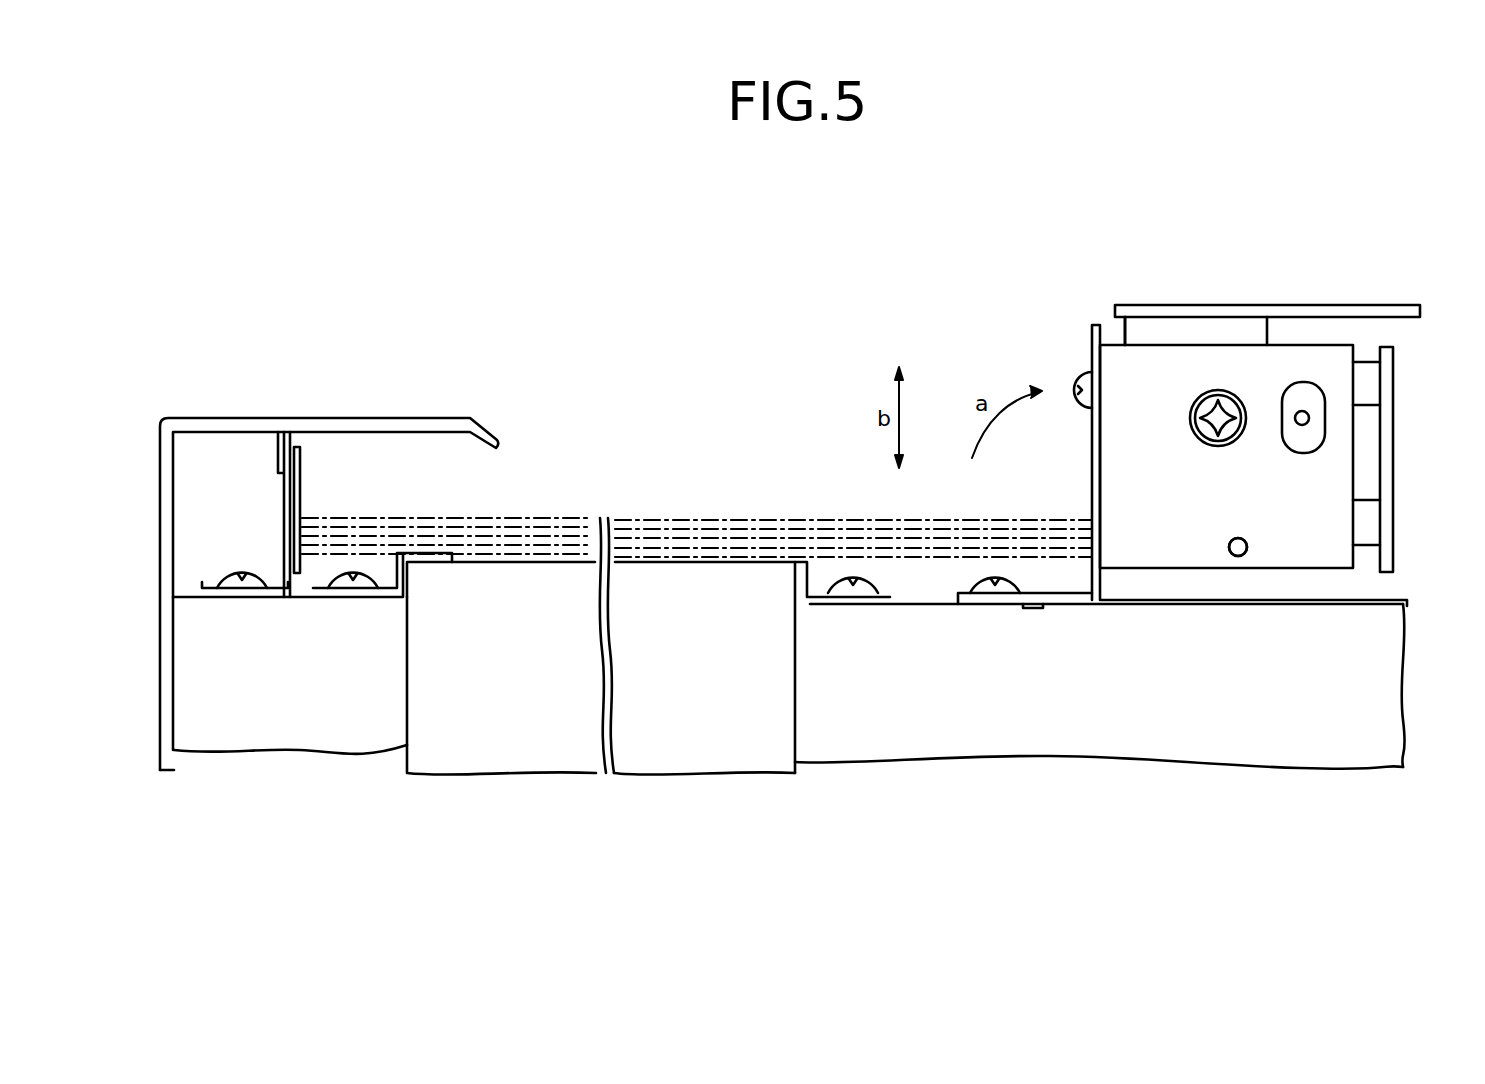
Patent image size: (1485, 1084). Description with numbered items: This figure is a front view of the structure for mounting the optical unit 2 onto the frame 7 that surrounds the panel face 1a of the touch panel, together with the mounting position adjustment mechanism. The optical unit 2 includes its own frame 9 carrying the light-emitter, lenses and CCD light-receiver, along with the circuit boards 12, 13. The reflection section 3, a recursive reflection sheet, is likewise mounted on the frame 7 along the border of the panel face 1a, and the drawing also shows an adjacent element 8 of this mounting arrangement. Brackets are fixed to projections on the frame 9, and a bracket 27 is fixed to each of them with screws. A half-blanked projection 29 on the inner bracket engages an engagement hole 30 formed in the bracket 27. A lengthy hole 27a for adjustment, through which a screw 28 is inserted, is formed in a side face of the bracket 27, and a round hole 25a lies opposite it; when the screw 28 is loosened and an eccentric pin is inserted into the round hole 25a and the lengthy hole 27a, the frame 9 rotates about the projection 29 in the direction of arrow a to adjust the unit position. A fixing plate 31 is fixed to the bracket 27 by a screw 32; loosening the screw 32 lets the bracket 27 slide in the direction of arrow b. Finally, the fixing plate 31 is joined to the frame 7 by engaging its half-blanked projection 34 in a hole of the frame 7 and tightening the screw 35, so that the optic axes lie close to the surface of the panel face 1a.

The panel face 1a is at (683, 578).
The optical unit 2 is at (1410, 358).
The reflection section 3 is at (298, 483).
The frame 7 is at (869, 740).
The cover bar 8 is at (391, 430).
The frame 9 is at (1147, 325).
The circuit board 12 is at (1393, 535).
The circuit board 13 is at (1333, 305).
The round hole 25a is at (1310, 418).
The bracket 27 is at (1148, 548).
The lengthy hole for adjustment 27a is at (1322, 445).
The screw 28 is at (1218, 396).
The half-blanked projection 29 is at (1238, 556).
The engagement hole 30 is at (1250, 545).
The fixing plate 31 is at (1092, 484).
The screw 32 is at (1077, 382).
The half-blanked projection 34 is at (1037, 608).
The screw 35 is at (977, 600).